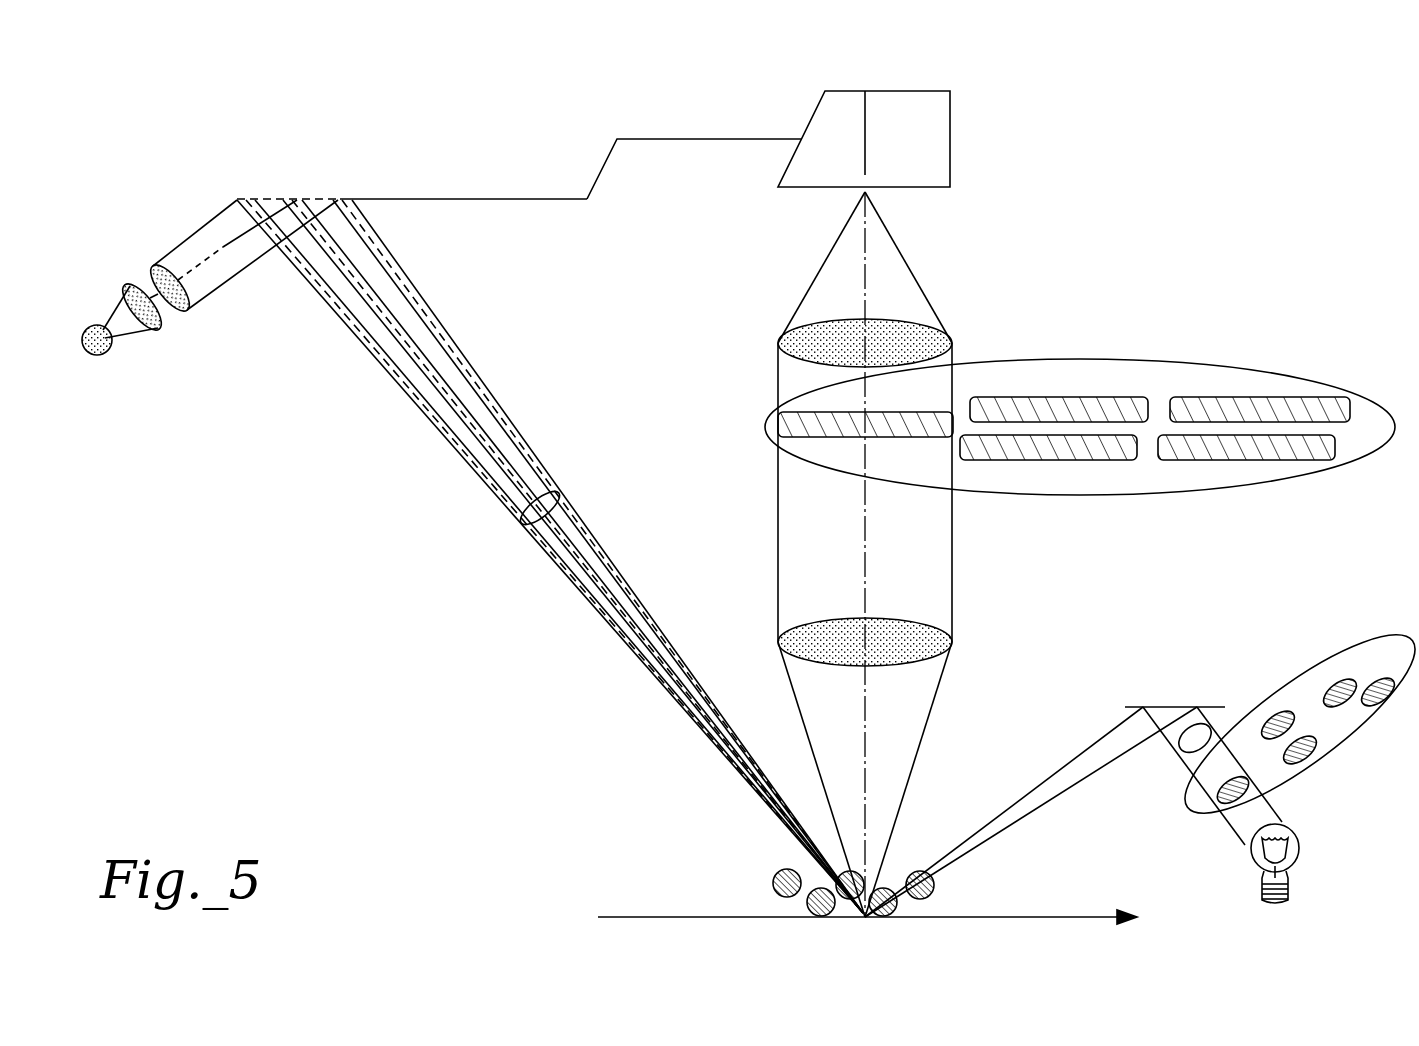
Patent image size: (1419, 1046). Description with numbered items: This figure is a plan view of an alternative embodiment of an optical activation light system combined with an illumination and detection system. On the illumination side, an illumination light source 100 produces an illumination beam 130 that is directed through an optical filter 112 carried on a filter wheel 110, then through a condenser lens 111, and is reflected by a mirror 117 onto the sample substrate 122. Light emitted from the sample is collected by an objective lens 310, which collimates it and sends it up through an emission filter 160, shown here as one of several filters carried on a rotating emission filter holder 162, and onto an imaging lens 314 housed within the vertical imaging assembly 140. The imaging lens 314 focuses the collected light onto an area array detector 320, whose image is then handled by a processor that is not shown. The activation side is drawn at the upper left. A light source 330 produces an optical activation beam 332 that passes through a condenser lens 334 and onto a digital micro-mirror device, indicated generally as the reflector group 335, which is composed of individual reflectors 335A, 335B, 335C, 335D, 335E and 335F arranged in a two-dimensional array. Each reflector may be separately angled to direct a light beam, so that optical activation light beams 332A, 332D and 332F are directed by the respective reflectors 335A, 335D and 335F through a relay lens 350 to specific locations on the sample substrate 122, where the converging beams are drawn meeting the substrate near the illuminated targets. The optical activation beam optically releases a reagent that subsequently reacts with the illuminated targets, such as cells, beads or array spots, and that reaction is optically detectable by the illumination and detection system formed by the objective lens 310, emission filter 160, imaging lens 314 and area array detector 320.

The illumination light source 100 is at (1300, 858).
The filter wheel 110 is at (1377, 643).
The condenser lens 111 is at (1178, 750).
The optical filter 112 is at (1213, 802).
The mirror 117 is at (1170, 707).
The sample substrate 122 is at (700, 917).
The illumination beam 130 is at (1277, 813).
The imaging optics tube 140 is at (953, 580).
The emission filter 160 is at (766, 428).
The emission filter wheel 162 is at (1257, 370).
The objective lens 310 is at (953, 642).
The imaging lens 314 is at (953, 343).
The area array detector 320 is at (952, 138).
The light source 330 is at (93, 353).
The optical activation beam 332 is at (148, 333).
The condenser lens 334 is at (148, 253).
The laser beam bundle 335 is at (188, 128).
The reflector 335A is at (245, 199).
The reflector 335B is at (253, 198).
The reflector 335C is at (287, 198).
The reflector 335D is at (300, 198).
The reflector 335E is at (318, 198).
The reflector 335F is at (340, 199).
The optical activation light beam 332A is at (410, 393).
The optical activation light beam 332D is at (423, 365).
The optical activation light beam 332F is at (612, 568).
The relay lens 350 is at (558, 497).